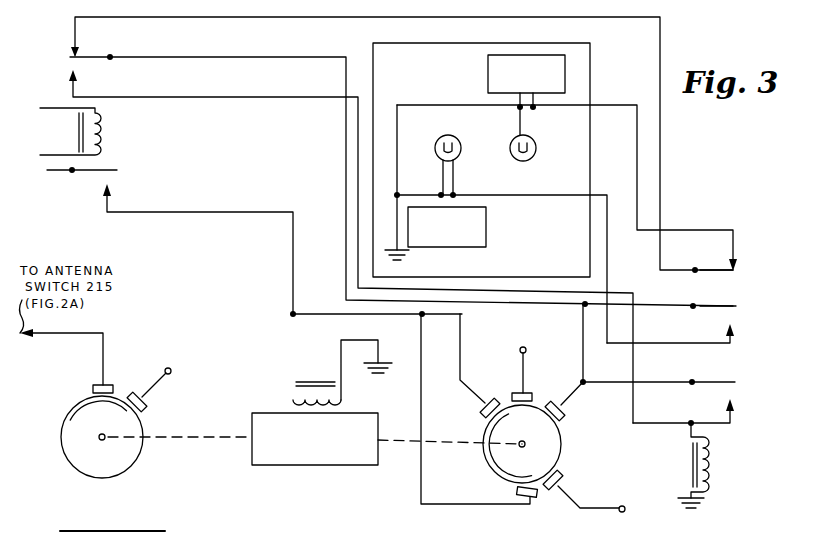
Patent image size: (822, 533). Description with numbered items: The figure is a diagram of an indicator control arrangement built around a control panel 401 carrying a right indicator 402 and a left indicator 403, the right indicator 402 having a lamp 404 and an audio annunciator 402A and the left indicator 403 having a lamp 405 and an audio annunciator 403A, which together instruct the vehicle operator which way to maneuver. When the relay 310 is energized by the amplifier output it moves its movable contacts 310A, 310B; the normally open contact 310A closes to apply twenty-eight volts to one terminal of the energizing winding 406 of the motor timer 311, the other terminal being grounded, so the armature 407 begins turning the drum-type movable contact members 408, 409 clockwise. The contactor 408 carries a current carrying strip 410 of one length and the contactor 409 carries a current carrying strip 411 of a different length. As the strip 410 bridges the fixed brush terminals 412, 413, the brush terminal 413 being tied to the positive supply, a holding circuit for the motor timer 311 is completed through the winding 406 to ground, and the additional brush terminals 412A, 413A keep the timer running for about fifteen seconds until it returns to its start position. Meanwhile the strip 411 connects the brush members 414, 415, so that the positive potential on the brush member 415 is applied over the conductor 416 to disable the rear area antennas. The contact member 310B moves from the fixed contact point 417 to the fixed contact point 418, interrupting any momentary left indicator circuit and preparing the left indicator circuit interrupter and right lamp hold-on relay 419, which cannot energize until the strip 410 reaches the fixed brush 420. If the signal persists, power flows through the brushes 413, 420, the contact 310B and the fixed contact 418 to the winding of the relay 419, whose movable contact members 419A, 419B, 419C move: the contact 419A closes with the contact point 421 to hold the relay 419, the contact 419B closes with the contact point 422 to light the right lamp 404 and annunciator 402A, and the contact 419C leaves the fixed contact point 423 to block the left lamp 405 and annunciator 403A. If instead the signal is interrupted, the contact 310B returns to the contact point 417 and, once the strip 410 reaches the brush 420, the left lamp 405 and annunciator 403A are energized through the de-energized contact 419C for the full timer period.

The relay 310 is at (65, 139).
The movable contact 310A is at (100, 170).
The movable contact member 310B is at (100, 57).
The motor timer 311 is at (328, 492).
The control panel 401 is at (590, 66).
The right indicator 402 is at (433, 149).
The audio annunciator 402A is at (433, 248).
The left indicator 403 is at (576, 133).
The audio annunciator 403A is at (488, 66).
The lamp 404 is at (444, 154).
The lamp 405 is at (536, 150).
The energizing winding 406 is at (292, 402).
The armature 407 is at (350, 413).
The movable contact member 408 is at (561, 450).
The movable contact member 409 is at (134, 466).
The current carrying strip 410 is at (488, 468).
The current carrying strip 411 is at (78, 403).
The brush terminal 412 is at (481, 418).
The brush terminal 412A is at (518, 499).
The brush terminal 413 is at (532, 395).
The brush terminal 413A is at (560, 481).
The brush member 414 is at (113, 385).
The brush member 415 is at (146, 410).
The conductor 416 is at (70, 333).
The fixed contact point 417 is at (74, 31).
The fixed contact point 418 is at (74, 81).
The left indicator circuit interrupter and right lamp hold-on relay 419 is at (770, 472).
The movable contact member 419A is at (724, 382).
The movable contact member 419B is at (724, 306).
The movable contact 419C is at (724, 270).
The fixed brush 420 is at (563, 420).
The contact point 421 is at (721, 409).
The contact point 422 is at (724, 334).
The fixed contact point 423 is at (725, 246).